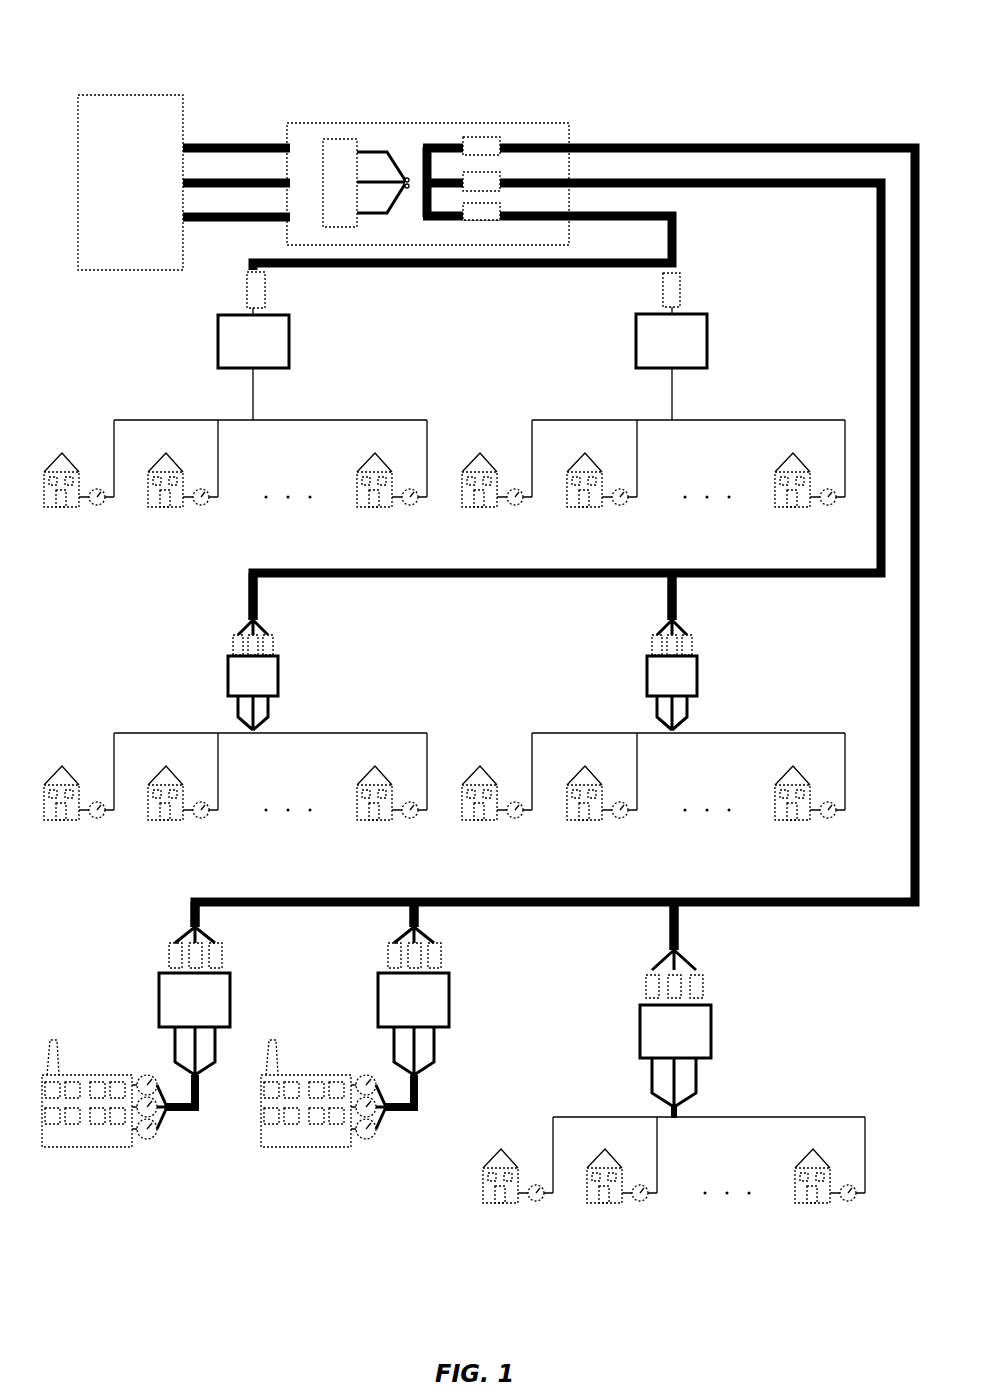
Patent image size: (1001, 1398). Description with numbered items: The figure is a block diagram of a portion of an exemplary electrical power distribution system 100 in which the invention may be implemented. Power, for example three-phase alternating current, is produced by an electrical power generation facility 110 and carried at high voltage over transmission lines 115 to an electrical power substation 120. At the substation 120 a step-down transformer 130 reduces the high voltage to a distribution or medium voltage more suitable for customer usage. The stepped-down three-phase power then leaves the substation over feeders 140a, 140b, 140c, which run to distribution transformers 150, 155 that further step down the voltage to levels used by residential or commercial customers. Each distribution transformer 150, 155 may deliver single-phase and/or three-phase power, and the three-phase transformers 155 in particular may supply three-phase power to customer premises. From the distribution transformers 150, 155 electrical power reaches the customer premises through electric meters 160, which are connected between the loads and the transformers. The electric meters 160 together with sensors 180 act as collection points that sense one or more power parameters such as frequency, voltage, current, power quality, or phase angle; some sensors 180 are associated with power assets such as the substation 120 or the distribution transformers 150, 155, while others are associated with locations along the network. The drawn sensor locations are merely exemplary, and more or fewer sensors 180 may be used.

The electrical power distribution system 100 is at (140, 42).
The electrical power generation facility 110 is at (130, 182).
The transmission lines 115 is at (243, 226).
The electrical power substation 120 is at (327, 123).
The step-down transformer 130 is at (323, 150).
The feeder 140a is at (675, 250).
The feeder 140b is at (873, 285).
The feeder 140c is at (843, 148).
The distribution transformer 150 is at (462, 367).
The three-phase distribution transformer 155 is at (434, 851).
The electric meter 160 is at (453, 858).
The sensor 180 is at (462, 128).